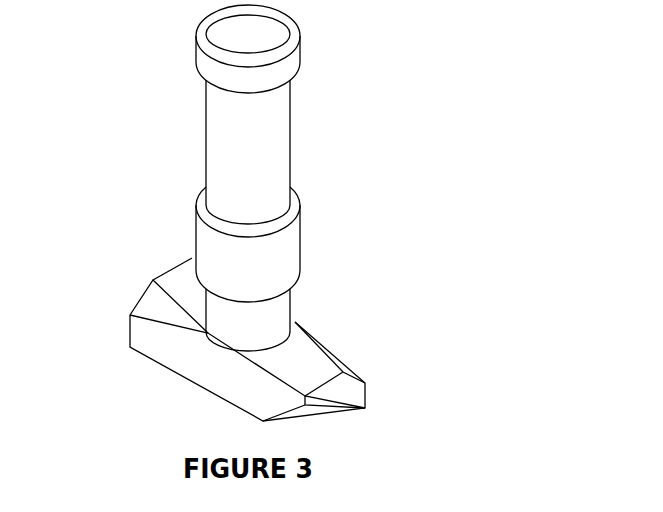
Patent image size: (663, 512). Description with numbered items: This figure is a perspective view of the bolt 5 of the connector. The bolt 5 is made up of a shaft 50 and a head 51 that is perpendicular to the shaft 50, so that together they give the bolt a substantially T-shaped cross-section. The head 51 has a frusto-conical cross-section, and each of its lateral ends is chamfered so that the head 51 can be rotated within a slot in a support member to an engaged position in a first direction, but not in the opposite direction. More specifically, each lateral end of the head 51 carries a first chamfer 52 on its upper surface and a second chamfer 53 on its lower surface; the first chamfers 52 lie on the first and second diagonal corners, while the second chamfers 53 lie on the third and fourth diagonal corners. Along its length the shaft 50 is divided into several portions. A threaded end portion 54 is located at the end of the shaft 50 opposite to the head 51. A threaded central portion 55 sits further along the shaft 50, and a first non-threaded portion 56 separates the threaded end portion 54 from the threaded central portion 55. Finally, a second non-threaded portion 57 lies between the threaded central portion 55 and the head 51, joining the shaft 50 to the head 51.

The bolt 5 is at (410, 164).
The shaft 50 is at (265, 44).
The head 51 is at (207, 371).
The first chamfer 52 is at (306, 410).
The second chamfer 53 is at (153, 307).
The threaded end portion 54 is at (203, 65).
The threaded central portion 55 is at (265, 280).
The first non-threaded portion 56 is at (265, 160).
The second non-threaded portion 57 is at (265, 342).